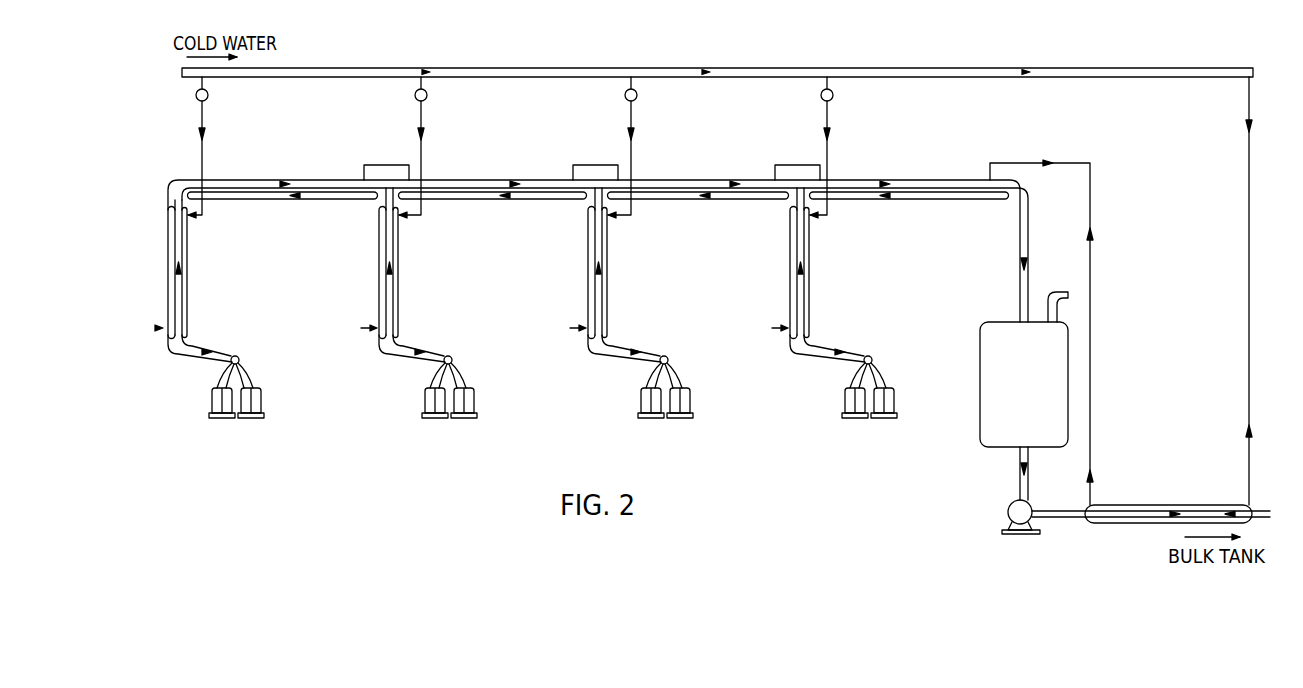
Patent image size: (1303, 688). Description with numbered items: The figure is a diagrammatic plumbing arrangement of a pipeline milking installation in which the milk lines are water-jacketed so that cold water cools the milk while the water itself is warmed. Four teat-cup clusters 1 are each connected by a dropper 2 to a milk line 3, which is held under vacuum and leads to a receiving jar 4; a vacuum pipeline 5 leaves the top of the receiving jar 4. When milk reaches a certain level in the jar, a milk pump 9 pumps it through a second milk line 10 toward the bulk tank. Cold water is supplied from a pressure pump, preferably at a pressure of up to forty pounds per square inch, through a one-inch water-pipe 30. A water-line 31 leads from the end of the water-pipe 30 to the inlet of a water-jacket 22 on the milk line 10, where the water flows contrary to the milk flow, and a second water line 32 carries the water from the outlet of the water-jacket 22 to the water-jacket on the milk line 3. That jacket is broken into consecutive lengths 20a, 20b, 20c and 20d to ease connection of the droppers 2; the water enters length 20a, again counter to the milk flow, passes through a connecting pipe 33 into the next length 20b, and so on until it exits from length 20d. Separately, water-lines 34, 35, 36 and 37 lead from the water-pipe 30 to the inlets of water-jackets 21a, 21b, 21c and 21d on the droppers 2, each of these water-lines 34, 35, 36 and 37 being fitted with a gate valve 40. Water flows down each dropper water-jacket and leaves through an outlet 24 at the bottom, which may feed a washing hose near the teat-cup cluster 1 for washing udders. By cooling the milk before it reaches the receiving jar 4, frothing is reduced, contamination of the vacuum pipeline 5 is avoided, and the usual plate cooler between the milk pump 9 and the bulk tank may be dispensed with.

The teat-cup cluster 1 is at (240, 360).
The dropper 2 is at (189, 351).
The milk line 3 is at (172, 193).
The receiving jar 4 is at (980, 348).
The vacuum pipeline 5 is at (1058, 292).
The milk pump 9 is at (1006, 510).
The second milk line 10 is at (1075, 519).
The water-jacket length 20a is at (918, 199).
The water-jacket length 20b is at (692, 199).
The water-jacket length 20c is at (484, 199).
The water-jacket length 20d is at (307, 199).
The water-jacket 21a is at (188, 257).
The water-jacket 21b is at (466, 275).
The water-jacket 21c is at (674, 275).
The water-jacket 21d is at (876, 275).
The water-jacket 22 is at (1140, 505).
The outlet 24 is at (160, 328).
The water-pipe 30 is at (870, 68).
The water-line 31 is at (1246, 271).
The second water line 32 is at (1093, 338).
The connecting pipe 33 is at (366, 164).
The water-line 34 is at (205, 140).
The water-line 35 is at (424, 140).
The water-line 36 is at (634, 140).
The water-line 37 is at (830, 140).
The gate valve 40 is at (208, 95).